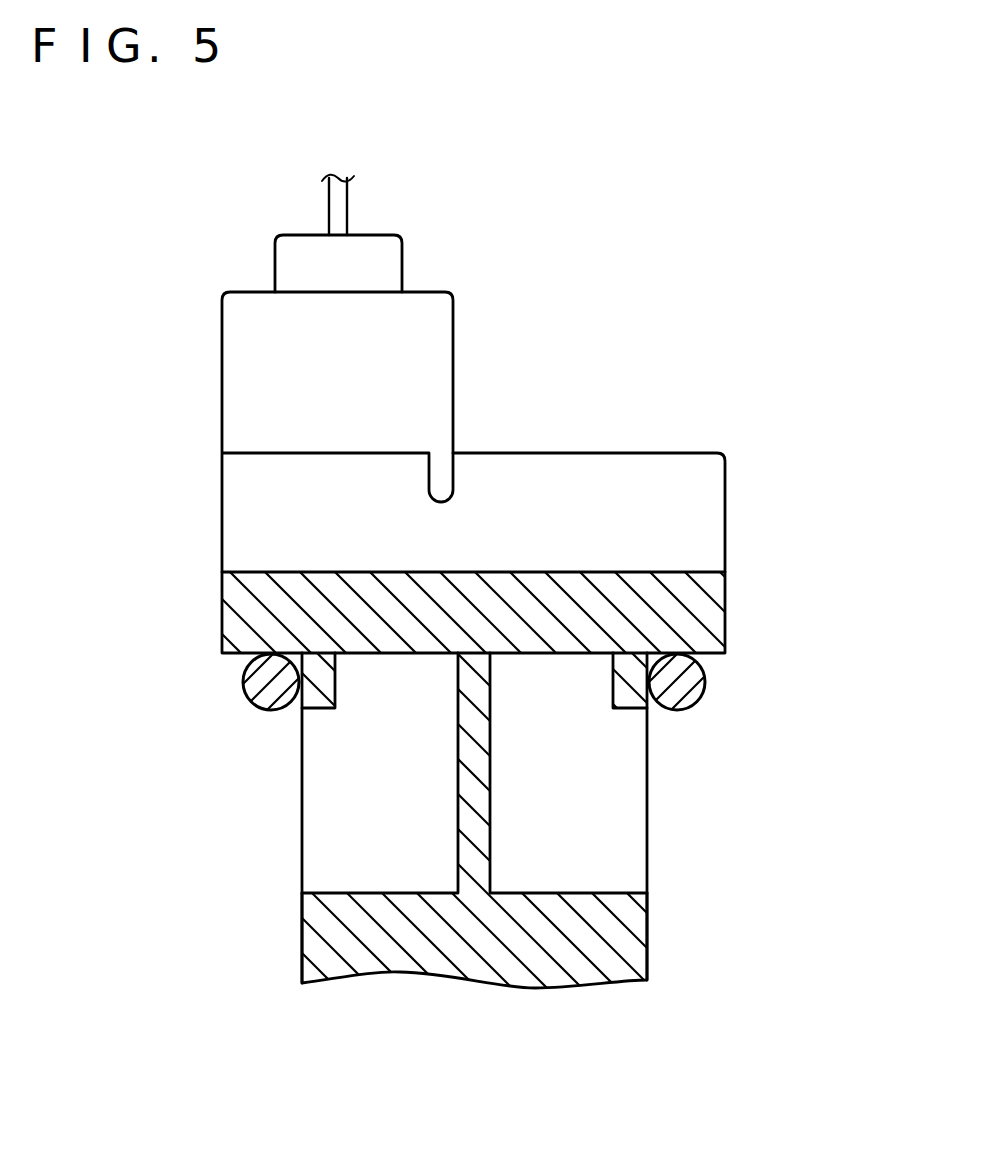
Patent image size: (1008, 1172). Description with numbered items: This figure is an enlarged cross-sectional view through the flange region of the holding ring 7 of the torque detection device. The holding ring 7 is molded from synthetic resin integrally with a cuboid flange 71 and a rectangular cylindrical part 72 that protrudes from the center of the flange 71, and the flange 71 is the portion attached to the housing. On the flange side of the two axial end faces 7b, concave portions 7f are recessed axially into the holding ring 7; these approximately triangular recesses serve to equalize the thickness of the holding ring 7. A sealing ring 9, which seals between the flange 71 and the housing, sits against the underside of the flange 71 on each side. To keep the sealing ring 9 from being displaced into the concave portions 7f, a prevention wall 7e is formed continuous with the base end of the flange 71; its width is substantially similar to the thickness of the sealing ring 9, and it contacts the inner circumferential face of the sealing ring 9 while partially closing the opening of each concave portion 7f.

The holding ring 7 is at (652, 903).
The axial end faces 7b is at (302, 937).
The prevention wall 7e is at (321, 712).
The concave portions 7f is at (312, 824).
The sealing ring 9 is at (262, 684).
The flange 71 is at (725, 605).
The rectangular cylindrical part 72 is at (565, 460).